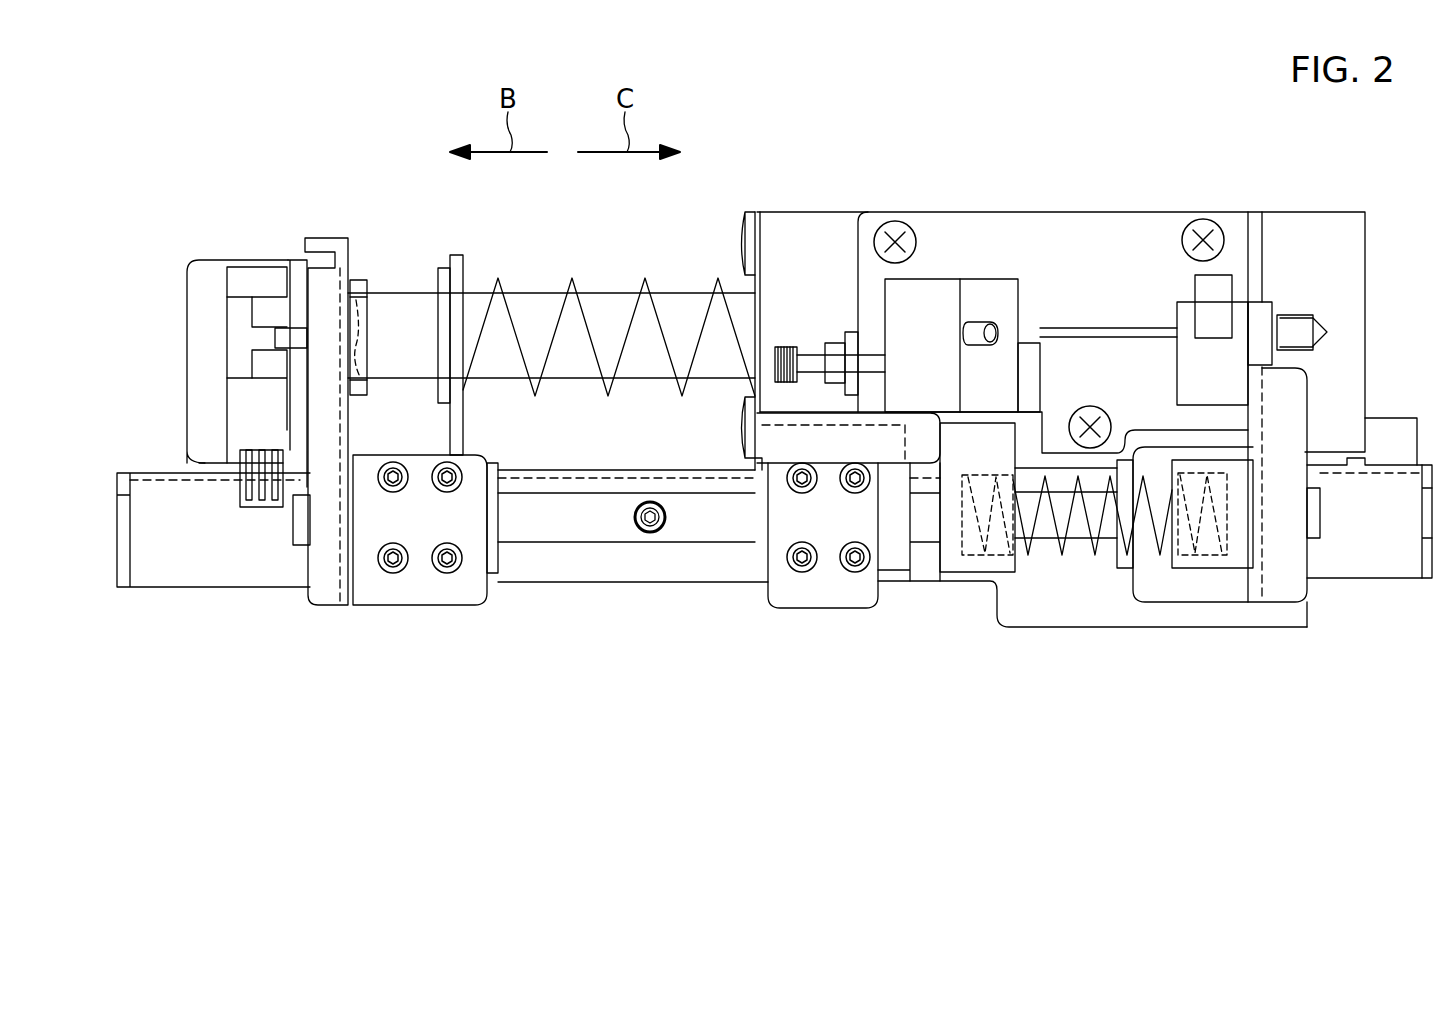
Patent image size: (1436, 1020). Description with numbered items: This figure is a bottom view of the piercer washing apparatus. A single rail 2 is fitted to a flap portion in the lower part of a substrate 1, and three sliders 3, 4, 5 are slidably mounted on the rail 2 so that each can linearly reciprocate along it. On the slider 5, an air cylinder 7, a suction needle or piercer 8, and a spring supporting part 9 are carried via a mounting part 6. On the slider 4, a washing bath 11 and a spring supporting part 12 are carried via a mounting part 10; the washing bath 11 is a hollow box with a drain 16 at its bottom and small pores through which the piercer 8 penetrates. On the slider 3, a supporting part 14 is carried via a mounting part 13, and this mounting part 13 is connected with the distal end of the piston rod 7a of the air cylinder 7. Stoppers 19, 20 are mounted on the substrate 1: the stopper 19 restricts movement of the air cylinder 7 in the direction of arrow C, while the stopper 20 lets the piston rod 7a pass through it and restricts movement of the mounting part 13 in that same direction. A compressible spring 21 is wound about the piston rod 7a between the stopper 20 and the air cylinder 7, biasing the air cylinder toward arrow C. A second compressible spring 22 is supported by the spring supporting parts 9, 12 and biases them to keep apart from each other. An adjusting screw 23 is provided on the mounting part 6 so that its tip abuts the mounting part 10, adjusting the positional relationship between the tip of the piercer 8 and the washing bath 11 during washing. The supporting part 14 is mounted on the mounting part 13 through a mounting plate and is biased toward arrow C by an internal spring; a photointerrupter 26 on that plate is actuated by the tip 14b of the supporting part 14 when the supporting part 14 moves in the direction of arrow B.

The substrate 1 is at (585, 568).
The rail 2 is at (698, 528).
The slider 3 is at (497, 560).
The slider 4 is at (893, 560).
The slider 5 is at (1127, 563).
The mounting part 6 is at (1238, 590).
The air cylinder 7 is at (1295, 232).
The piston rod 7a is at (618, 305).
The piercer 8 is at (1097, 333).
The spring supporting part 9 is at (1182, 565).
The mounting part 10 is at (822, 455).
The washing bath 11 is at (935, 295).
The spring supporting part 12 is at (1005, 560).
The mounting part 13 is at (330, 590).
The supporting part 14 is at (358, 318).
The tip 14b is at (290, 338).
The drain 16 is at (985, 335).
The stopper 19 is at (1387, 435).
The stopper 20 is at (450, 283).
The compressible spring 21 is at (498, 290).
The compressible spring 22 is at (1068, 550).
The adjusting screw 23 is at (815, 365).
The photointerrupter 26 is at (265, 278).